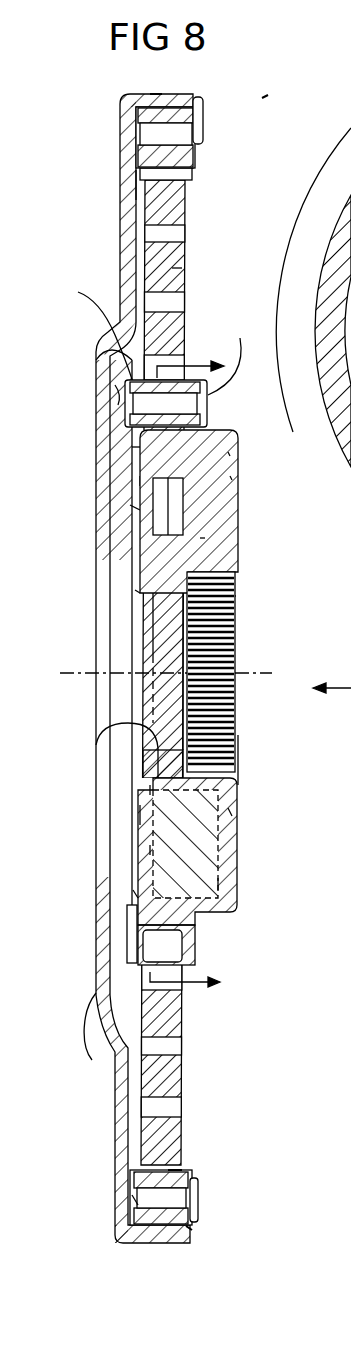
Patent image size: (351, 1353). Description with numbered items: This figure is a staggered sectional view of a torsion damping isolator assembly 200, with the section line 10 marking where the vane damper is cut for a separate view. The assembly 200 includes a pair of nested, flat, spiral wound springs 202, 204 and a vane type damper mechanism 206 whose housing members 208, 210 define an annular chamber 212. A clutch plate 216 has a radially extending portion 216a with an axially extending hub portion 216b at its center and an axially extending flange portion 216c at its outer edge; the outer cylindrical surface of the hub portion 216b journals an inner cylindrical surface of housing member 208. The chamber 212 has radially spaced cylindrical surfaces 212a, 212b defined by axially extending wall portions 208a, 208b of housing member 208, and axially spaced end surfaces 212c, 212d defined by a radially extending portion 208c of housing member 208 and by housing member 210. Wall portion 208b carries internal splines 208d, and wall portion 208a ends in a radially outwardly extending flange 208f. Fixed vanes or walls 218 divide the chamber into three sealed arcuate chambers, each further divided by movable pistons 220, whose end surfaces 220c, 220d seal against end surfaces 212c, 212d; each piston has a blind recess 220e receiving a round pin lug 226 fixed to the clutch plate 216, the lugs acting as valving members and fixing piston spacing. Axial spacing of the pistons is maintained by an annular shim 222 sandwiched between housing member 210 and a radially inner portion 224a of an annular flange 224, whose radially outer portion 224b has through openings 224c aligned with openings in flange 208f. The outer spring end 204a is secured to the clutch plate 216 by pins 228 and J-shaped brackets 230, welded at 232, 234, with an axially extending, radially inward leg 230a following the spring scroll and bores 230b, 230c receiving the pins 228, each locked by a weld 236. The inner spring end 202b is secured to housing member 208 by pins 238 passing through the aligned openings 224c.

The section line 10— 10 is at (201, 663).
The torsion damping isolator assembly 200 is at (276, 87).
The spiral wound spring 202 is at (175, 212).
The radially inner end of spring 202b is at (207, 408).
The spiral wound spring 204 is at (175, 268).
The radially outer end of spring 204a is at (193, 160).
The vane type damper mechanism 206 is at (247, 636).
The housing member 208 is at (249, 848).
The axially extending annular wall portion 208a is at (135, 895).
The axially extending annular wall portion 208b is at (130, 725).
The radially extending portion of housing member 208c is at (230, 812).
The internal splines 208d is at (235, 596).
The radially outwardly extending flange 208f is at (195, 955).
The housing member 210 is at (128, 815).
The annular chamber 212 is at (240, 557).
The cylindrical surface of annular chamber 212a is at (229, 452).
The cylindrical surface of annular chamber 212b is at (135, 590).
The end surface of annular chamber 212c is at (232, 478).
The end surface of annular chamber 212d is at (150, 850).
The clutch plate 216 is at (106, 1111).
The radially extending portion of clutch plate 216a is at (67, 1032).
The axially extending hub portion 216b is at (238, 741).
The axially extending flange portion 216c is at (150, 94).
The fixed vanes or walls 218 is at (244, 883).
The movable vanes or pistons 220 is at (232, 518).
The axially facing end surface of piston 220c is at (217, 538).
The axially facing end surface of piston 220d is at (150, 790).
The blind recess or bore 220e is at (140, 545).
The annular shim 222 is at (140, 481).
The annular flange 224 is at (113, 940).
The radially inner portion of flange 224a is at (132, 447).
The radially outer portion of flange 224b is at (92, 328).
The through openings 224c is at (115, 385).
The round pin lugs 226 is at (130, 508).
The pins 228 is at (205, 140).
The brackets 230 is at (193, 178).
The axially extending and radially inward leg of bracket 230a is at (178, 1170).
The bore in bracket leg 230b is at (200, 1203).
The bore in bracket leg 230c is at (133, 1200).
The weld 232 is at (132, 181).
The weld 234 is at (200, 97).
The weld 236 is at (188, 1226).
The pins 238 is at (236, 353).